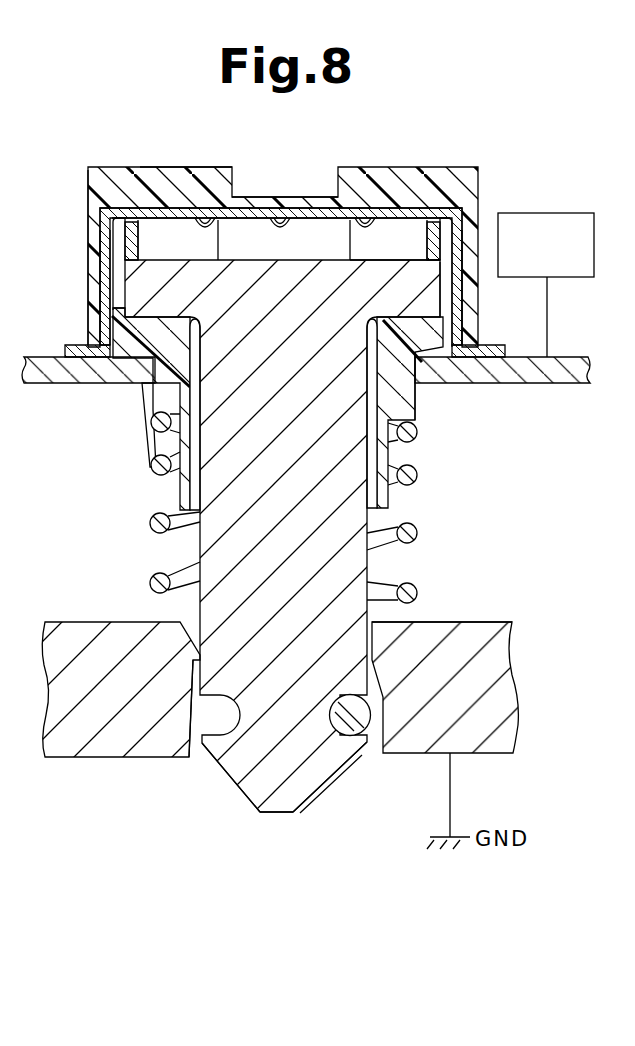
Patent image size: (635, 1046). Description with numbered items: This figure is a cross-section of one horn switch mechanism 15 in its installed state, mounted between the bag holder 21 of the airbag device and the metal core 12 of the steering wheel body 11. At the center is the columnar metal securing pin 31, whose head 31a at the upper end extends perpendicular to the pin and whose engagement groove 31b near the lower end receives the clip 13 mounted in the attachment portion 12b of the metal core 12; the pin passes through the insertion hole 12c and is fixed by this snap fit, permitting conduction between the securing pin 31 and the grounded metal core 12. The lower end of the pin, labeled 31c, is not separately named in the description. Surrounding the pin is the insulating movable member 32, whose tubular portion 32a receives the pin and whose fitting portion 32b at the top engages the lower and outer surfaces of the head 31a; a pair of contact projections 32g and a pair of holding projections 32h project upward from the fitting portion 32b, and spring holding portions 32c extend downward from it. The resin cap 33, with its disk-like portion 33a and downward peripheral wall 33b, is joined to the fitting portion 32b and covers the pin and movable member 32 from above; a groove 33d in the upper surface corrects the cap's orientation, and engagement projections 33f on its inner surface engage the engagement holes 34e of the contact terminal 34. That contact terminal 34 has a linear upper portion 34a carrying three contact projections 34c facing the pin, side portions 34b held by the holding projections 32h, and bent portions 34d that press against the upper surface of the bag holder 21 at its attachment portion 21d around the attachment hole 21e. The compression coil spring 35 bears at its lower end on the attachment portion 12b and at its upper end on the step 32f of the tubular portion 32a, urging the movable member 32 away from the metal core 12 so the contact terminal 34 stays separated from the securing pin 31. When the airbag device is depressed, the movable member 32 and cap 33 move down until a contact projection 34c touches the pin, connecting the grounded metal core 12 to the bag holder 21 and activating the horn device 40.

The horn switch mechanism 15 is at (507, 87).
The cap 33 is at (440, 166).
The disk-like portion 33a is at (176, 170).
The peripheral wall 33b is at (89, 223).
The groove 33d is at (326, 194).
The engagement projections 33f is at (440, 268).
The contact terminal 34 is at (128, 207).
The upper portion 34a is at (241, 207).
The side portions 34b is at (100, 258).
The contact projections 34c is at (281, 208).
The bent portions 34d is at (86, 347).
The engagement hole 34e is at (466, 286).
The movable member 32 is at (466, 313).
The tubular portion 32a is at (180, 488).
The fitting portion 32b is at (118, 293).
The spring holding portions 32c is at (140, 440).
The step 32f is at (418, 433).
The contact projections 32g is at (352, 238).
The holding projections 32h is at (137, 238).
The securing pin 31 is at (368, 572).
The head 31a is at (417, 262).
The engagement groove 31b is at (346, 736).
The pin tip 31c is at (277, 814).
The clip 13 is at (365, 732).
The compression coil spring 35 is at (152, 528).
The bag holder 21 is at (558, 383).
The attachment portions 21d is at (56, 383).
The attachment hole 21e is at (418, 372).
The steering wheel body 11 is at (313, 689).
The metal core 12 is at (504, 658).
The attachment portions 12b is at (485, 622).
The insertion hole 12c is at (192, 757).
The horn device 40 is at (548, 212).